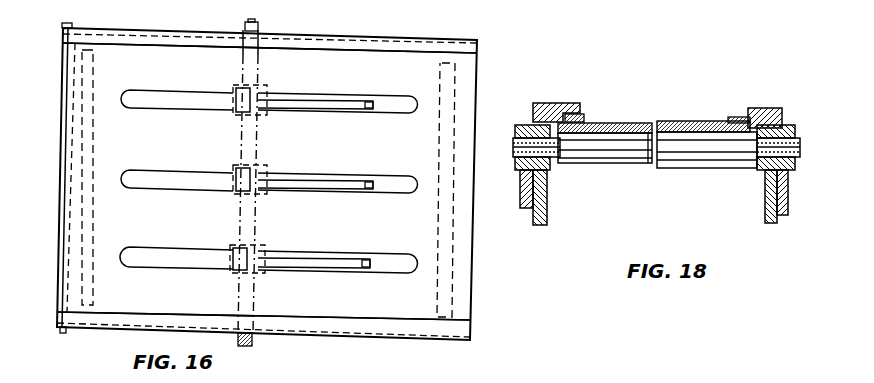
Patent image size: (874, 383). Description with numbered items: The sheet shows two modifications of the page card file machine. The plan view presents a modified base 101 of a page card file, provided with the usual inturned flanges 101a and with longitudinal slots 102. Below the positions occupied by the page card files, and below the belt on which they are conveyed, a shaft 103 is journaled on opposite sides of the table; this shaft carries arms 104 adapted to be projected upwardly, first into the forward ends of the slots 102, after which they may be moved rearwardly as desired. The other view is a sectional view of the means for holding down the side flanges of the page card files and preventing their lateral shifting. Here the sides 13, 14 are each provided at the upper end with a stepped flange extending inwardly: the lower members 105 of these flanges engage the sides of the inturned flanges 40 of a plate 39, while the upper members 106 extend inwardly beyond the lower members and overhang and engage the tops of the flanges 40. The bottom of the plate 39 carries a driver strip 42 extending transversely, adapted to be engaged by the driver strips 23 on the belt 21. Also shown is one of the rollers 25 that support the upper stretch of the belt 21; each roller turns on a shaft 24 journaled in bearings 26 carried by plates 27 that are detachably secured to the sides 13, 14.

In FIG. 16, the base 101 is at (403, 227).
In FIG. 16, the inturned flanges 101a is at (346, 47).
In FIG. 16, the driver strips 42 is at (80, 270).
In FIG. 16, the longitudinal slots 102 is at (160, 102).
In FIG. 16, the shaft 103 is at (254, 340).
In FIG. 16, the arms 104 is at (346, 104).
In FIG. 18, the lower members of the stepped flanges 105 is at (546, 122).
In FIG. 18, the inturned flanges 40 is at (584, 117).
In FIG. 18, the shafts 24 is at (517, 146).
In FIG. 18, the bearings 26 is at (515, 155).
In FIG. 18, the plates 27 is at (520, 180).
In FIG. 18, the side 14 is at (547, 200).
In FIG. 18, the side 13 is at (765, 215).
In FIG. 18, the belt 21 is at (646, 112).
In FIG. 18, the driver strips 23 is at (605, 118).
In FIG. 18, the rollers 25 is at (680, 162).
In FIG. 18, the plates 39 is at (716, 122).
In FIG. 18, the upper members of the stepped flanges 106 is at (736, 117).